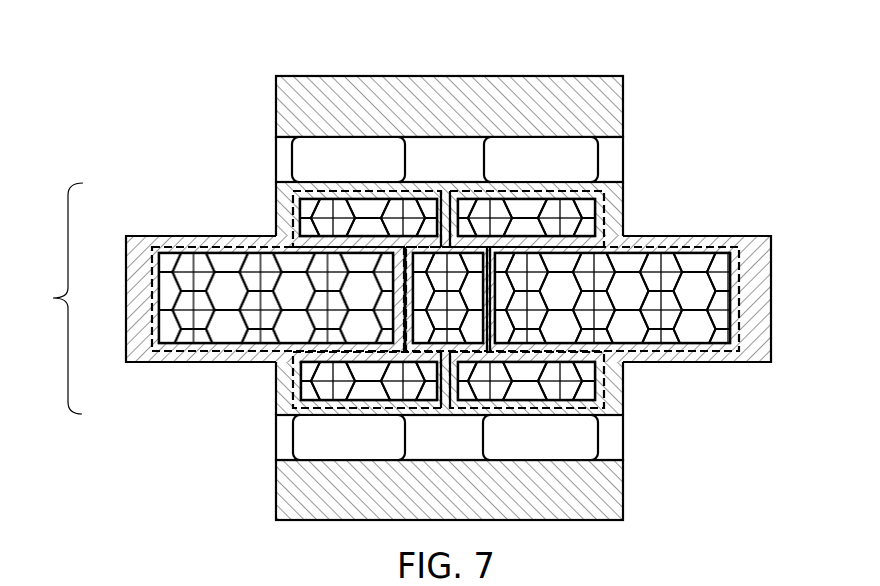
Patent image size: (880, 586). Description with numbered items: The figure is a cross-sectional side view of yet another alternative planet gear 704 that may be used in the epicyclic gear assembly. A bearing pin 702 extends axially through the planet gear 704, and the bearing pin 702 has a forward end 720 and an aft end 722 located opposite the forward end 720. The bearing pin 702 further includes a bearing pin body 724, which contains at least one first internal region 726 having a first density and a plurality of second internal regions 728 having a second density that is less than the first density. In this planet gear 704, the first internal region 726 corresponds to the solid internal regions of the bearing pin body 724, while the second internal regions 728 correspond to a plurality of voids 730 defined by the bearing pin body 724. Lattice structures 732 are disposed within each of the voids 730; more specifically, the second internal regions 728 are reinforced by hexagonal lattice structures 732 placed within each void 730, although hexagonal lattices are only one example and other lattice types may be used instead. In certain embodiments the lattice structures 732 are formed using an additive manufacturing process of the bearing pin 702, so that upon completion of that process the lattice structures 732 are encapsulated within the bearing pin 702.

The bearing pin 702 is at (53, 298).
The planet gear 704 is at (248, 54).
The forward end 720 is at (127, 236).
The aft end 722 is at (760, 235).
The bearing pin body 724 is at (624, 192).
The first internal region 726 is at (624, 214).
The second internal regions 728 is at (292, 199).
The voids 730 is at (300, 214).
The lattice structures 732 is at (174, 320).